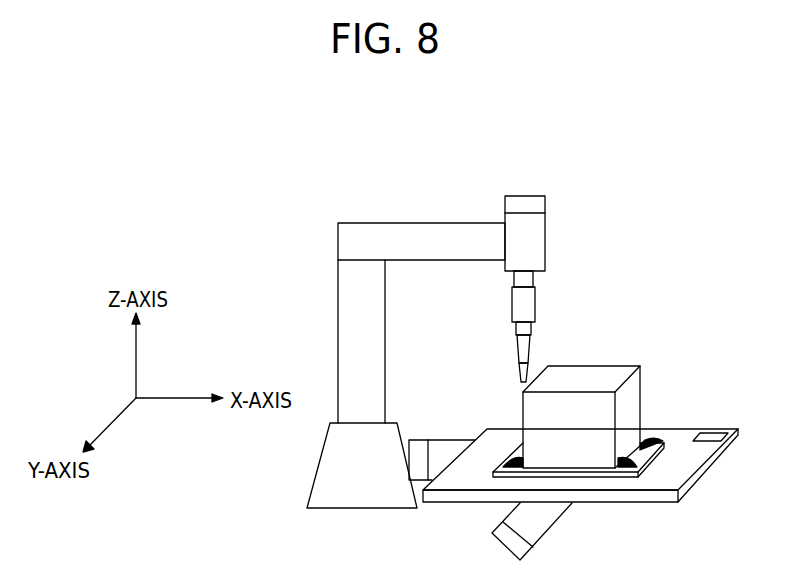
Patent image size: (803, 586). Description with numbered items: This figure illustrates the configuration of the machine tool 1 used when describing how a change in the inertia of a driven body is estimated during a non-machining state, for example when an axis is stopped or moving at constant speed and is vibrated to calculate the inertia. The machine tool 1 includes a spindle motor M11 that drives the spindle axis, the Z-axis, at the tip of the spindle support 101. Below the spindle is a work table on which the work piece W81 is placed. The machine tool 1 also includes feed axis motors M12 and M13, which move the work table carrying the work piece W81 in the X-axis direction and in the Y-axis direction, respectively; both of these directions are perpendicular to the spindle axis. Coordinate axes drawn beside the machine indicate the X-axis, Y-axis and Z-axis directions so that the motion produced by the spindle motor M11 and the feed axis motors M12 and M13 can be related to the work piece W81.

The machine tool 1 is at (375, 152).
The spindle support 101 is at (446, 223).
The spindle motor M11 is at (546, 222).
The feed axis motor M12 is at (436, 440).
The feed axis motor M13 is at (543, 533).
The work piece W81 is at (612, 366).